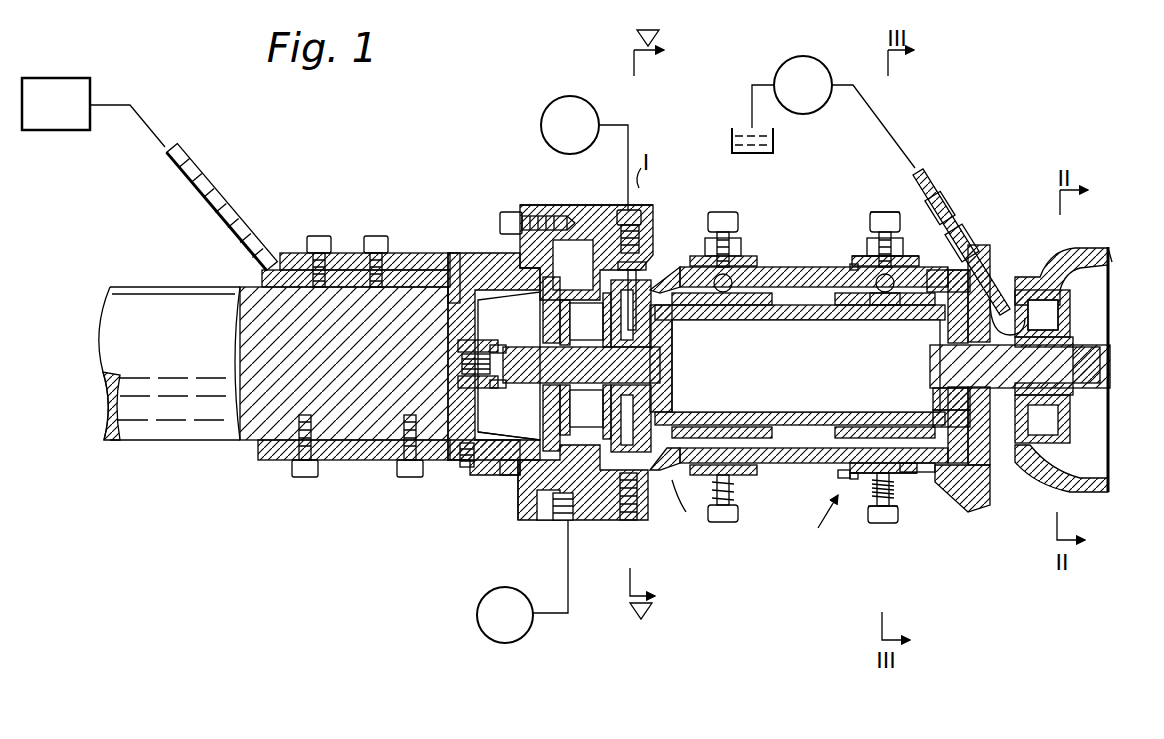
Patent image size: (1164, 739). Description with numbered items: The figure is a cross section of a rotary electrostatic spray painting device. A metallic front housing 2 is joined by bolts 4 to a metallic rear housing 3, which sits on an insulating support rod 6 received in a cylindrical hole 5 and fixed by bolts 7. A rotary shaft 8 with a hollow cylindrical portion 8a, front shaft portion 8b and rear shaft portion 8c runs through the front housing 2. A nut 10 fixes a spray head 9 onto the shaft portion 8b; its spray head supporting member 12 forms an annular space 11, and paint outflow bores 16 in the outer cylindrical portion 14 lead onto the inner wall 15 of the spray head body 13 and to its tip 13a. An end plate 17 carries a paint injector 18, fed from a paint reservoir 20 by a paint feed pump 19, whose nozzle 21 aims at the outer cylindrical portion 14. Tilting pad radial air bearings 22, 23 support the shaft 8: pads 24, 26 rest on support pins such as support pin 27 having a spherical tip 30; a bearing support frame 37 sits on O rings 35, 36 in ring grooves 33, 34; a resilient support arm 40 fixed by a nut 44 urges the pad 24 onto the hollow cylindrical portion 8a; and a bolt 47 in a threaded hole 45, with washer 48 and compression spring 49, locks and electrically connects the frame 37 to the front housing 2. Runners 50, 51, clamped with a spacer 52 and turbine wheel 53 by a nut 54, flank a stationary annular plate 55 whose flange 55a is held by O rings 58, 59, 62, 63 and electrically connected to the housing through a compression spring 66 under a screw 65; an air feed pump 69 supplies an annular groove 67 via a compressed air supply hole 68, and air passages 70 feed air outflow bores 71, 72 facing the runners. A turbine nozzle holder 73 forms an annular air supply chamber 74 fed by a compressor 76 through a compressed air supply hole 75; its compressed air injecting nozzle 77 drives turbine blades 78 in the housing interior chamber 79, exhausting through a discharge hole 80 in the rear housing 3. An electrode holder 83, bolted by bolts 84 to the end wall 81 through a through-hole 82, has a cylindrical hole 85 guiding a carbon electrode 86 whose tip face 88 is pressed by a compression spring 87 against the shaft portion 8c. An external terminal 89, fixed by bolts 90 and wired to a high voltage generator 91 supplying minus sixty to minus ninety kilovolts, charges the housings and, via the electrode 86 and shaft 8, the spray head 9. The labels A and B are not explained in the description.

The front housing 2 is at (786, 267).
The rear housing 3 is at (462, 252).
The bolts 4 is at (500, 222).
The cylindrical hole 5 is at (352, 458).
The support rod 6 is at (176, 440).
The bolts 7 is at (412, 477).
The rotary shaft 8 is at (790, 428).
The hollow cylindrical portion 8a is at (800, 320).
The shaft portion 8b is at (990, 408).
The shaft portion 8c is at (526, 400).
The spray head 9 is at (1097, 248).
The nut 10 is at (1100, 386).
The annular space 11 is at (1102, 332).
The spray head supporting member 12 is at (1075, 345).
The spray head body 13 is at (1066, 265).
The tip 13a is at (1110, 250).
The outer cylindrical portion 14 is at (1075, 302).
The inner wall 15 is at (1110, 270).
The paint outflow bores 16 is at (1062, 288).
The end plate 17 is at (984, 495).
The paint injector 18 is at (948, 205).
The paint feed pump 19 is at (815, 62).
The paint reservoir 20 is at (776, 135).
The nozzle 21 is at (1000, 312).
The tilting pad radial air bearing 22 is at (860, 256).
The tilting pad radial air bearing 23 is at (740, 250).
The pad 24 is at (925, 300).
The pad 26 is at (888, 427).
The support pin 27 is at (845, 320).
The spherical tip 30 is at (882, 320).
The ring groove 33 is at (896, 482).
The ring groove 34 is at (848, 468).
The O ring 35 is at (915, 235).
The O ring 36 is at (850, 258).
The bearing support frame 37 is at (930, 480).
The support arm 40 is at (870, 215).
The nut 44 is at (882, 212).
The threaded hole 45 is at (868, 480).
The bolt 47 is at (885, 523).
The washer 48 is at (872, 515).
The compression spring 49 is at (902, 512).
The runner 50 is at (680, 478).
The runner 51 is at (603, 423).
The spacer 52 is at (592, 400).
The turbine wheel 53 is at (543, 310).
The nut 54 is at (550, 330).
The annular plate 55 is at (665, 392).
The flange 55a is at (668, 490).
The O ring 58 is at (650, 270).
The O ring 59 is at (600, 235).
The O ring 62 is at (648, 262).
The O ring 63 is at (575, 225).
The screw 65 is at (632, 522).
The compression spring 66 is at (660, 525).
The annular groove 67 is at (655, 245).
The compressed air supply hole 68 is at (618, 208).
The air feed pump 69 is at (592, 97).
The air passages 70 is at (602, 318).
The air outflow bores 71 is at (668, 350).
The air outflow bores 72 is at (603, 340).
The turbine nozzle holder 73 is at (603, 522).
The air supply chamber 74 is at (568, 520).
The compressed air supply hole 75 is at (563, 522).
The compressor 76 is at (504, 643).
The compressed air injecting nozzle 77 is at (540, 522).
The turbine blades 78 is at (520, 478).
The housing interior chamber 79 is at (482, 490).
The discharge hole 80 is at (462, 468).
The end wall 81 is at (502, 330).
The through-hole 82 is at (458, 388).
The electrode holder 83 is at (458, 348).
The bolts 84 is at (452, 270).
The cylindrical hole 85 is at (515, 330).
The electrode 86 is at (496, 402).
The compression spring 87 is at (458, 370).
The tip face 88 is at (506, 386).
The external terminal 89 is at (226, 200).
The bolts 90 is at (378, 235).
The high voltage generator 91 is at (63, 132).
The chamber A is at (819, 523).
The chamber B is at (686, 507).